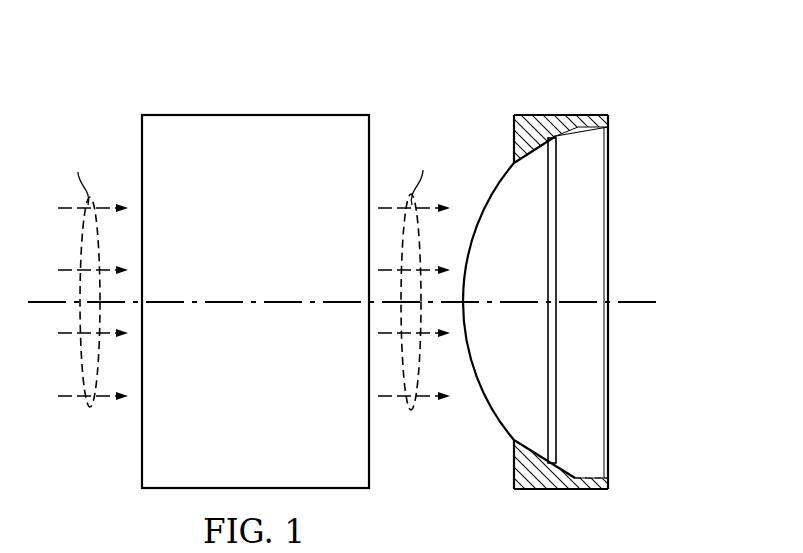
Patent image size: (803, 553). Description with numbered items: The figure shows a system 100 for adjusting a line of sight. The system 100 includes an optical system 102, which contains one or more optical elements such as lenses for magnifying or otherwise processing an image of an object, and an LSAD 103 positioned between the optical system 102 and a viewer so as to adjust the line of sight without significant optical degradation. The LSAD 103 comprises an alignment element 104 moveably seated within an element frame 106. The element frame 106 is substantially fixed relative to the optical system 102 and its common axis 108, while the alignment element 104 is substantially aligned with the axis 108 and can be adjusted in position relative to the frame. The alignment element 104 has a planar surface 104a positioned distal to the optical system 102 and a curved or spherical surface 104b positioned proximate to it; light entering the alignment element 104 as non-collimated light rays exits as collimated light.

The system for adjusting a line of sight 100 is at (232, 49).
The optical system 102 is at (275, 223).
The LSAD 103 is at (641, 396).
The alignment element 104 is at (500, 437).
The planar surface 104a is at (556, 400).
The curved or spherical surface 104b is at (496, 413).
The element frame 106 is at (570, 113).
The common axis 108 is at (638, 302).